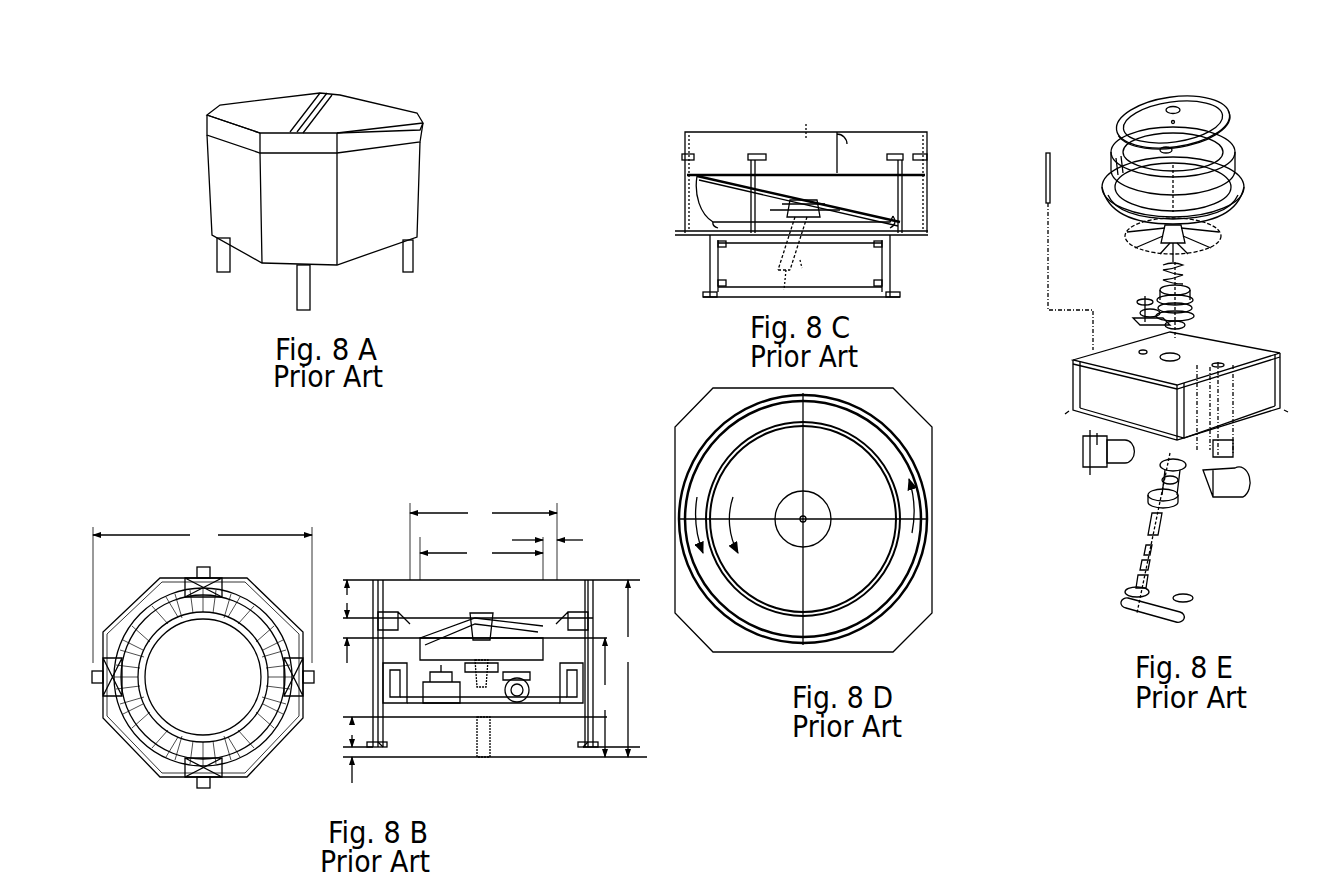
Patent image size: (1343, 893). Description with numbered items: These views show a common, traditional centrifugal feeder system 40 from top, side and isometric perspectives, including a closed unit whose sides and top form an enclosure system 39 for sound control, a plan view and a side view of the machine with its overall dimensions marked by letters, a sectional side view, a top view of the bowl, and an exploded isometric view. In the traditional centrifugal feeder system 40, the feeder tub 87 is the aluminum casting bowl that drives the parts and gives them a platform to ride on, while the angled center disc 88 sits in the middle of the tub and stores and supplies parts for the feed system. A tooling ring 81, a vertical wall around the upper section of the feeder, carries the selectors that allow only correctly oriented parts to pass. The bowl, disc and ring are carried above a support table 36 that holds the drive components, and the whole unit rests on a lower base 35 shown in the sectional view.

In FIG. 8C, the base frame 35 is at (892, 270).
In FIG. 8C, the support table 36 is at (773, 235).
In FIG. 8E, the support table 36 is at (1113, 355).
In FIG. 8A, the enclosure system 39 is at (390, 178).
In FIG. 8A, the traditional centrifugal feeder system 40 is at (359, 203).
In FIG. 8C, the traditional centrifugal feeder system 40 is at (796, 211).
In FIG. 8D, the traditional centrifugal feeder system 40 is at (863, 525).
In FIG. 8E, the traditional centrifugal feeder system 40 is at (1152, 329).
In FIG. 8B, the traditional centrifugal feeder system 40 is at (252, 518).
In FIG. 8D, the tooling ring 81 is at (927, 502).
In FIG. 8E, the tooling ring 81 is at (1233, 153).
In FIG. 8C, the feeder tub 87 is at (717, 198).
In FIG. 8E, the feeder tub 87 is at (1230, 193).
In FIG. 8C, the center disc 88 is at (827, 197).
In FIG. 8D, the center disc 88 is at (857, 553).
In FIG. 8E, the center disc 88 is at (1195, 118).